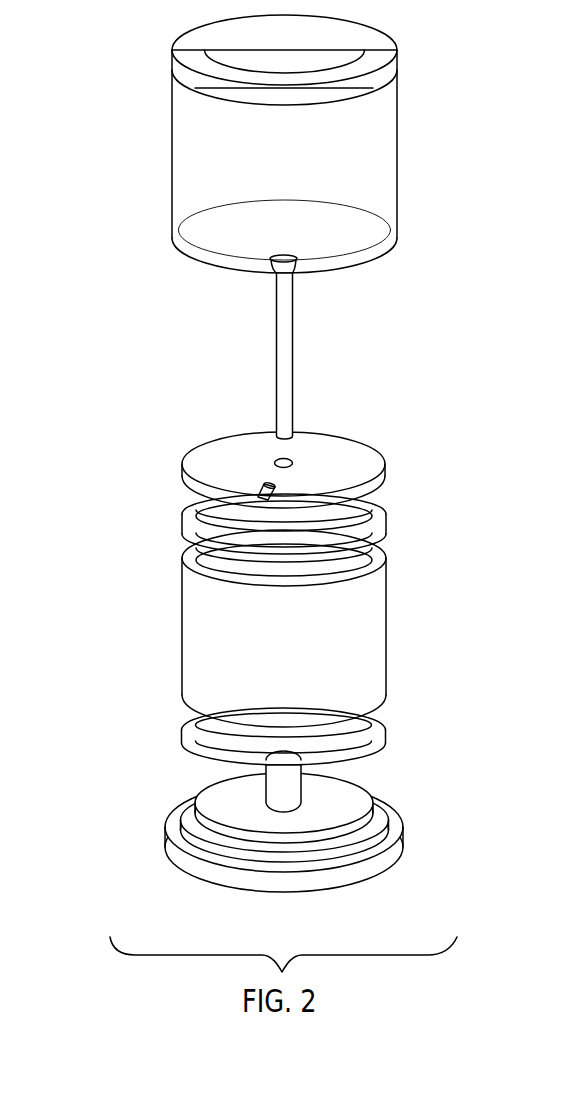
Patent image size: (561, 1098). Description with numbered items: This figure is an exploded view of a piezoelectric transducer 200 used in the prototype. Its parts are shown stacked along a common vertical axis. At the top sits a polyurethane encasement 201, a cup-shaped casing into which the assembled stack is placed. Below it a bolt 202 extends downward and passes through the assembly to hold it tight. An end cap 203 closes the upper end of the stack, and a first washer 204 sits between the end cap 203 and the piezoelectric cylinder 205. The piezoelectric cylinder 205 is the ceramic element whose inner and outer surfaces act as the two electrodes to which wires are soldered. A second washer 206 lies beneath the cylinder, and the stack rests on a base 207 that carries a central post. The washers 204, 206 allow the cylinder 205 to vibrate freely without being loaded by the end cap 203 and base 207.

The piezoelectric transducer 200 is at (106, 62).
The polyurethane encasement 201 is at (397, 172).
The bolt 202 is at (293, 335).
The end cap 203 is at (378, 474).
The washer 204 is at (380, 520).
The piezoelectric cylinder 205 is at (387, 598).
The washer 206 is at (385, 728).
The base 207 is at (385, 818).